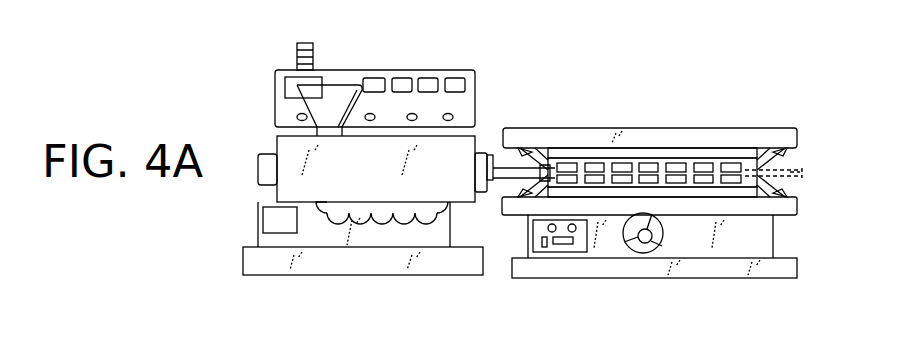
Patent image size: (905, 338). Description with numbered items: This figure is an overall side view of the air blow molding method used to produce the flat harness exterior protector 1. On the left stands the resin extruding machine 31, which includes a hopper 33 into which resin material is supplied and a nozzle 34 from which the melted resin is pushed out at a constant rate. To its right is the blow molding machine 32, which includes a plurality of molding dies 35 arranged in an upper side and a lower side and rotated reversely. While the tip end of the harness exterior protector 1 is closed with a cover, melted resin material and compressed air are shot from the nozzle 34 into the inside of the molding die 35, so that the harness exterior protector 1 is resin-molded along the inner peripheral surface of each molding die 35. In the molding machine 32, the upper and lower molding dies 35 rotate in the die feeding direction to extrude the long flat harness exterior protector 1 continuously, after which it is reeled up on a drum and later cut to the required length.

The flat harness exterior protector 1 is at (787, 173).
The resin extruding machine 31 is at (403, 70).
The blow molding machine 32 is at (638, 114).
The hopper 33 is at (337, 84).
The nozzle 34 is at (490, 178).
The molding die 35 is at (678, 152).